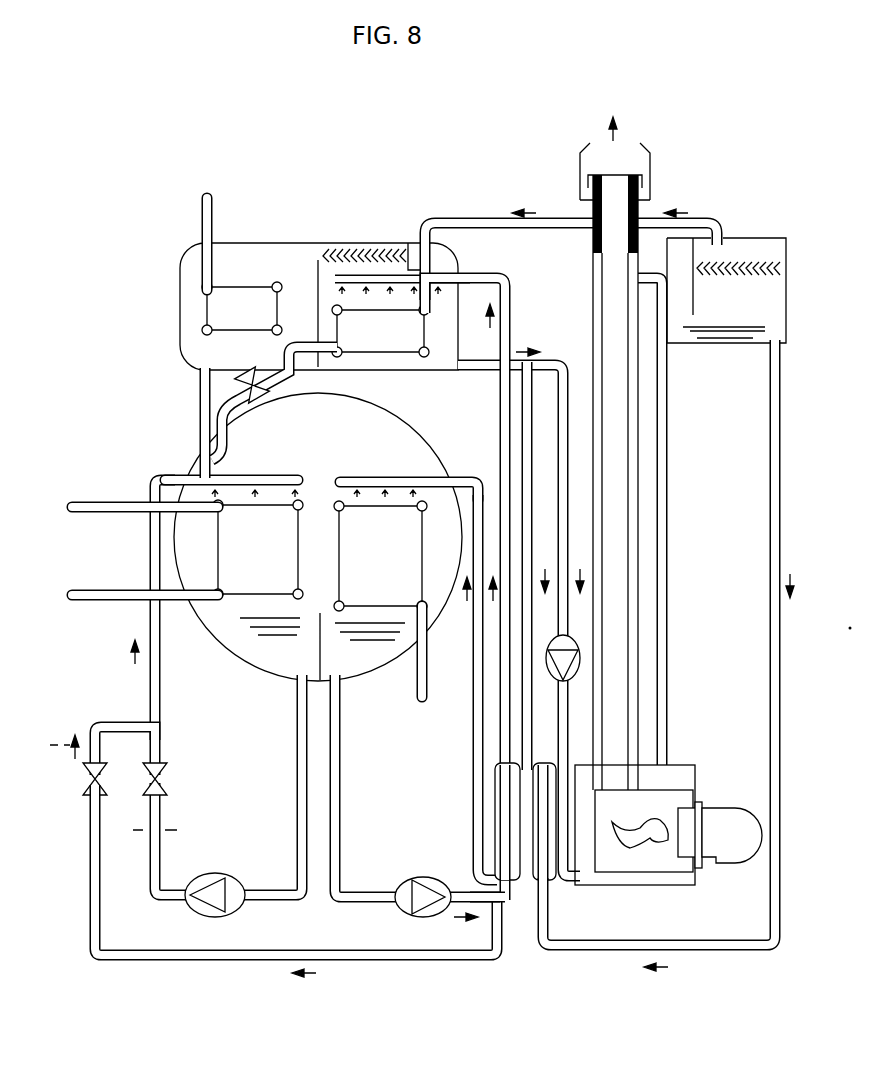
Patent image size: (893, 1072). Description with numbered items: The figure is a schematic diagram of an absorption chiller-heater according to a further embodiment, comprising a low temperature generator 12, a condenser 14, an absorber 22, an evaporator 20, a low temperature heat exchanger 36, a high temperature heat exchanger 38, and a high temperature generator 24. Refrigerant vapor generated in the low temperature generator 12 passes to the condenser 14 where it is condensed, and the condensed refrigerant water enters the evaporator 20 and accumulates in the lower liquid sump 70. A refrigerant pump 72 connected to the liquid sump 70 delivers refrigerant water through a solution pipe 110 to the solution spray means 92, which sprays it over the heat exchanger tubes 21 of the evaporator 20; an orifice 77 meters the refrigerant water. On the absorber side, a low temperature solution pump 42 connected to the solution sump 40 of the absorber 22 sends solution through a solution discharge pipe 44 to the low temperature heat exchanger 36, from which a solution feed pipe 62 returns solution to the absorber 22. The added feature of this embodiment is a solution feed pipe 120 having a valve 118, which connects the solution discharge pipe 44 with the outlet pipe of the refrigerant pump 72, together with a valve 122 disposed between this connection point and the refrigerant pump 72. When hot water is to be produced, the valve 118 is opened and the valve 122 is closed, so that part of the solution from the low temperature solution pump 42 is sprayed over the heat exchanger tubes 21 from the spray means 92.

The low temperature generator 12 is at (375, 325).
The condenser 14 is at (245, 303).
The evaporator 20 is at (255, 556).
The heat exchanger tubes 21 is at (312, 497).
The absorber 22 is at (380, 580).
The high temperature generator 24 is at (677, 763).
The low temperature heat exchanger 36 is at (505, 808).
The high temperature heat exchanger 38 is at (542, 865).
The solution sump 40 is at (422, 697).
The low temperature solution pump 42 is at (423, 917).
The solution discharge pipe 44 is at (473, 887).
The solution feed pipe 62 is at (477, 740).
The liquid sump 70 is at (276, 650).
The refrigerant pump 72 is at (230, 915).
The orifice 77 is at (138, 833).
The solution spray means 92 is at (247, 477).
The solution pipe 110 is at (150, 688).
The valve 118 is at (88, 783).
The solution feed pipe 120 is at (238, 962).
The valve 122 is at (166, 788).